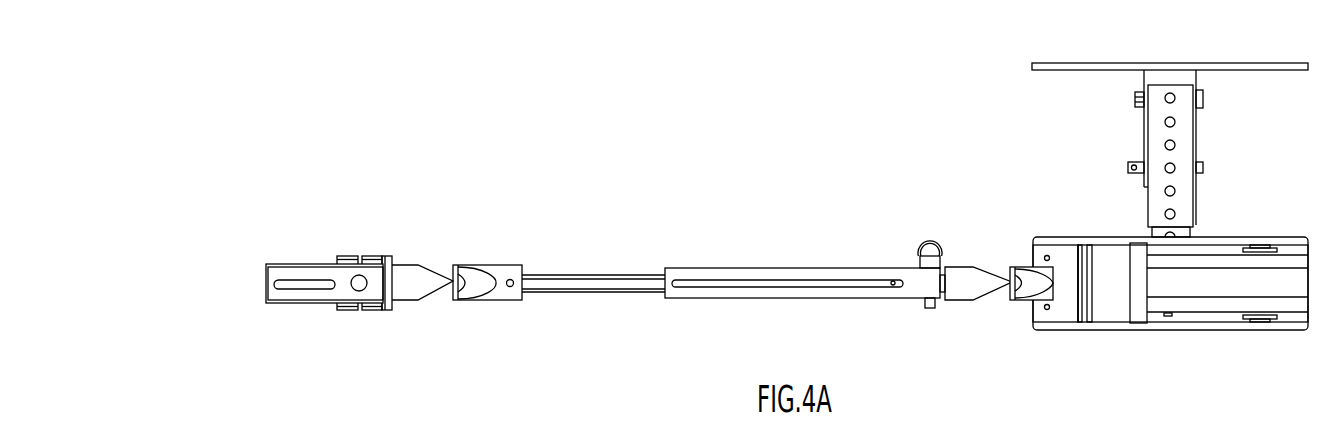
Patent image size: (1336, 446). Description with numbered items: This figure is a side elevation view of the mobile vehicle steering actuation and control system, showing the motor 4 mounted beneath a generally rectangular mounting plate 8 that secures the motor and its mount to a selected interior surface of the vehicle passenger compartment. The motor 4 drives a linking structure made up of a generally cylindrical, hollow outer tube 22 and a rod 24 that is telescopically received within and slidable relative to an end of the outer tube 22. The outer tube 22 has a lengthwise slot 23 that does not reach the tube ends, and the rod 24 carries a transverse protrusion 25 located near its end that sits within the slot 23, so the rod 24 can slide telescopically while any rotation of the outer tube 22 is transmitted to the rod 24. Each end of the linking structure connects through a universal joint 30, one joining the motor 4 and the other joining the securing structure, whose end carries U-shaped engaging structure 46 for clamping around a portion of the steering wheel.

The motor 4 is at (1290, 307).
The mounting plate 8 is at (1278, 62).
The outer tube 22 is at (805, 291).
The slot 23 is at (830, 283).
The rod 24 is at (573, 273).
The protrusion 25 is at (897, 286).
The universal joint 30 is at (422, 289).
The engaging structure 46 is at (307, 283).